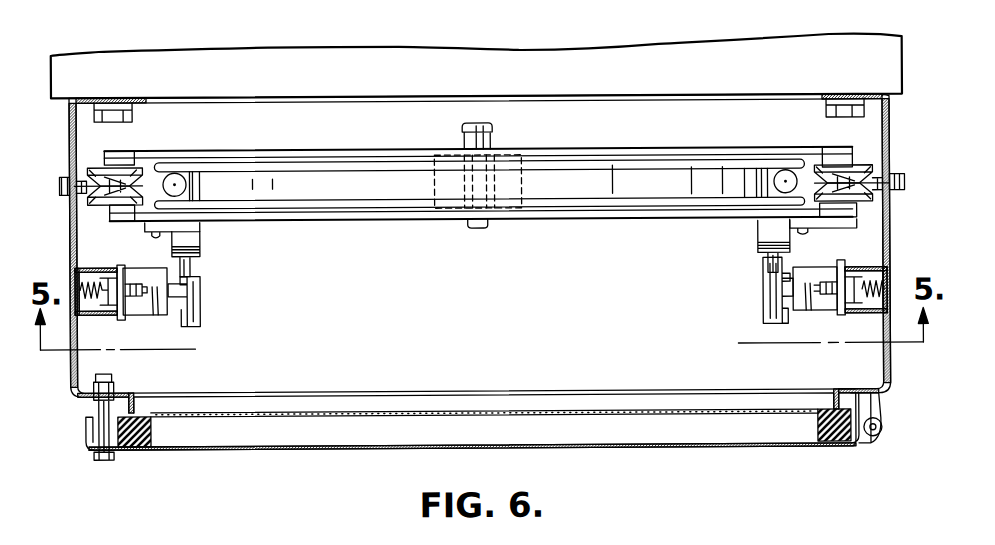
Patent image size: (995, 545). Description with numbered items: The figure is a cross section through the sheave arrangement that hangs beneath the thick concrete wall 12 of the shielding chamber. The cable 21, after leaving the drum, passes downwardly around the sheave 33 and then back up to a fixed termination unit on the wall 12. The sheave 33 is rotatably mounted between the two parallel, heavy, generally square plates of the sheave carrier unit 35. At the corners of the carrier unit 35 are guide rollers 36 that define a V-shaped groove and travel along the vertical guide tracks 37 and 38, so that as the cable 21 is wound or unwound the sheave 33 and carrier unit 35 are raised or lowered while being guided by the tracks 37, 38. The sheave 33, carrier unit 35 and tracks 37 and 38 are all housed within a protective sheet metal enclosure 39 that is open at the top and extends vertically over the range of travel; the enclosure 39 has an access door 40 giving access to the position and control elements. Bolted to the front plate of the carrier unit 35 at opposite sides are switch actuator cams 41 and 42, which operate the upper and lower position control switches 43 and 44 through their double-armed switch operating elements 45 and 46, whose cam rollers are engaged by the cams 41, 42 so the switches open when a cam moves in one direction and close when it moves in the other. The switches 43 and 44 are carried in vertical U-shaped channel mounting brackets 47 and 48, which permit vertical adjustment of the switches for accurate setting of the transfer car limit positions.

The concrete wall 12 is at (633, 65).
The cable 21 is at (814, 163).
The sheave 33 is at (344, 186).
The sheave carrier unit 35 is at (345, 222).
The guide rollers 36 is at (116, 203).
The vertical guide track 37 is at (100, 201).
The vertical guide track 38 is at (868, 168).
The protective sheet metal enclosure 39 is at (70, 137).
The access door 40 is at (643, 449).
The switch actuator cam 41 is at (200, 238).
The switch actuator cam 42 is at (758, 239).
The upper position control switch 43 is at (152, 311).
The lower position control switch 44 is at (808, 309).
The switch operating element 45 is at (200, 305).
The switch operating element 46 is at (763, 296).
The vertical mounting bracket 47 is at (100, 315).
The vertical mounting bracket 48 is at (871, 309).